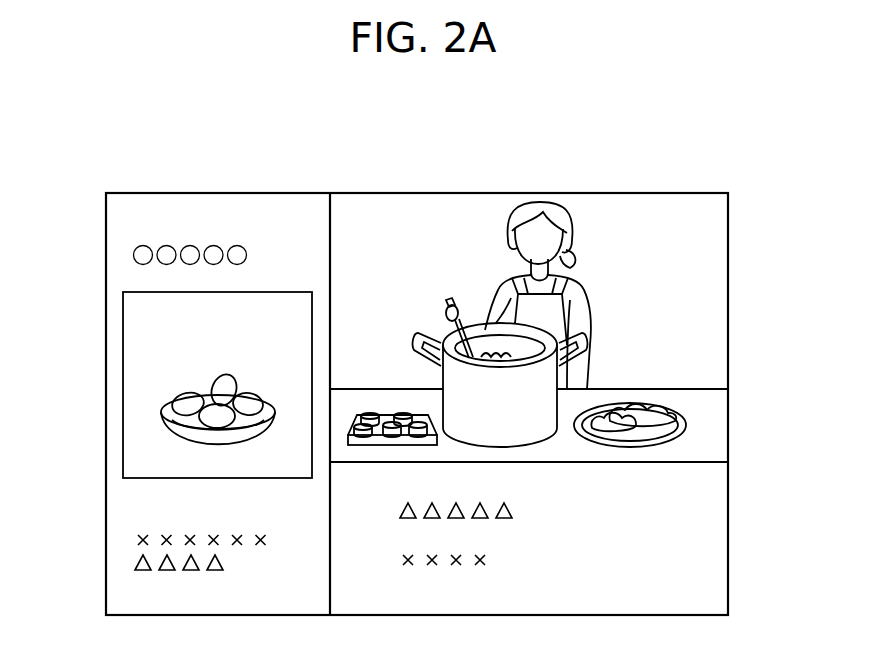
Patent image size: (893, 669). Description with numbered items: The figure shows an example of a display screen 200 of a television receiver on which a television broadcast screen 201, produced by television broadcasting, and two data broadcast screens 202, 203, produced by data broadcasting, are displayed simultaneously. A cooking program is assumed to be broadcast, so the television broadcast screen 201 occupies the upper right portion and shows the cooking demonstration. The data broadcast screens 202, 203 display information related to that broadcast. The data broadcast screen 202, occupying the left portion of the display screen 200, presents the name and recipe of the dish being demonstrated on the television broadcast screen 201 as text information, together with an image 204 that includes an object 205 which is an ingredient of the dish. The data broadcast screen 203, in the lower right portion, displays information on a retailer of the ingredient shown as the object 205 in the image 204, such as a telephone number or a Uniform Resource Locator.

The display screen 200 is at (688, 191).
The television broadcast screen 201 is at (710, 304).
The data broadcast screen 202 is at (183, 377).
The data broadcast screen 203 is at (710, 524).
The image 204 is at (174, 385).
The object 205 is at (160, 425).